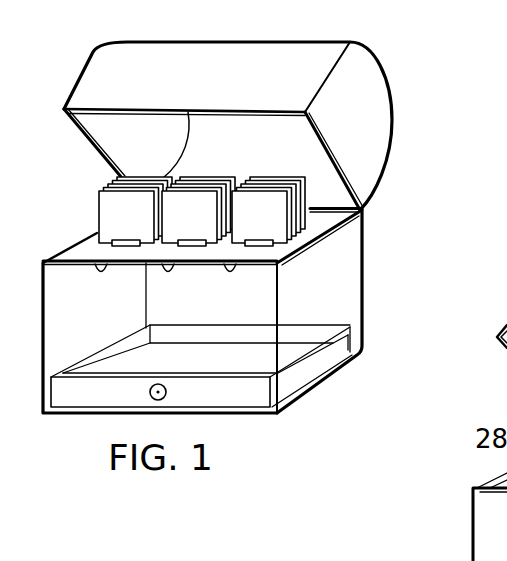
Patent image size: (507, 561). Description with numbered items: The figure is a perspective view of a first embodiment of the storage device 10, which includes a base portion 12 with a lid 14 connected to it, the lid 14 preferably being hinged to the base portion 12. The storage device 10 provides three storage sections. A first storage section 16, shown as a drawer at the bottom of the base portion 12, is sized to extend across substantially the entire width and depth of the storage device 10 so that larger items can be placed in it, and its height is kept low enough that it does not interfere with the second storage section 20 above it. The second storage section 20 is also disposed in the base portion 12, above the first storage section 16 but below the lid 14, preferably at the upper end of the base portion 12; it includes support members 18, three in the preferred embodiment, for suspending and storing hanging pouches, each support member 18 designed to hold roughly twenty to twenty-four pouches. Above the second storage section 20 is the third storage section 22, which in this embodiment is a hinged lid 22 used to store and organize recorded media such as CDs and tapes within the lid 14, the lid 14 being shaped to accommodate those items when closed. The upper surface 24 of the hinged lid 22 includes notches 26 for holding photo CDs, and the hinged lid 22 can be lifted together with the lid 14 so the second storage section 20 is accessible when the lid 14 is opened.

The storage device 10 is at (400, 144).
The base portion 12 is at (363, 292).
The lid 14 is at (383, 77).
The first storage section 16 is at (365, 337).
The support member 18 is at (102, 271).
The second storage section 20 is at (315, 276).
The third storage section (hinged lid) 22 is at (363, 210).
The upper surface 24 is at (87, 253).
The notches 26 is at (123, 238).